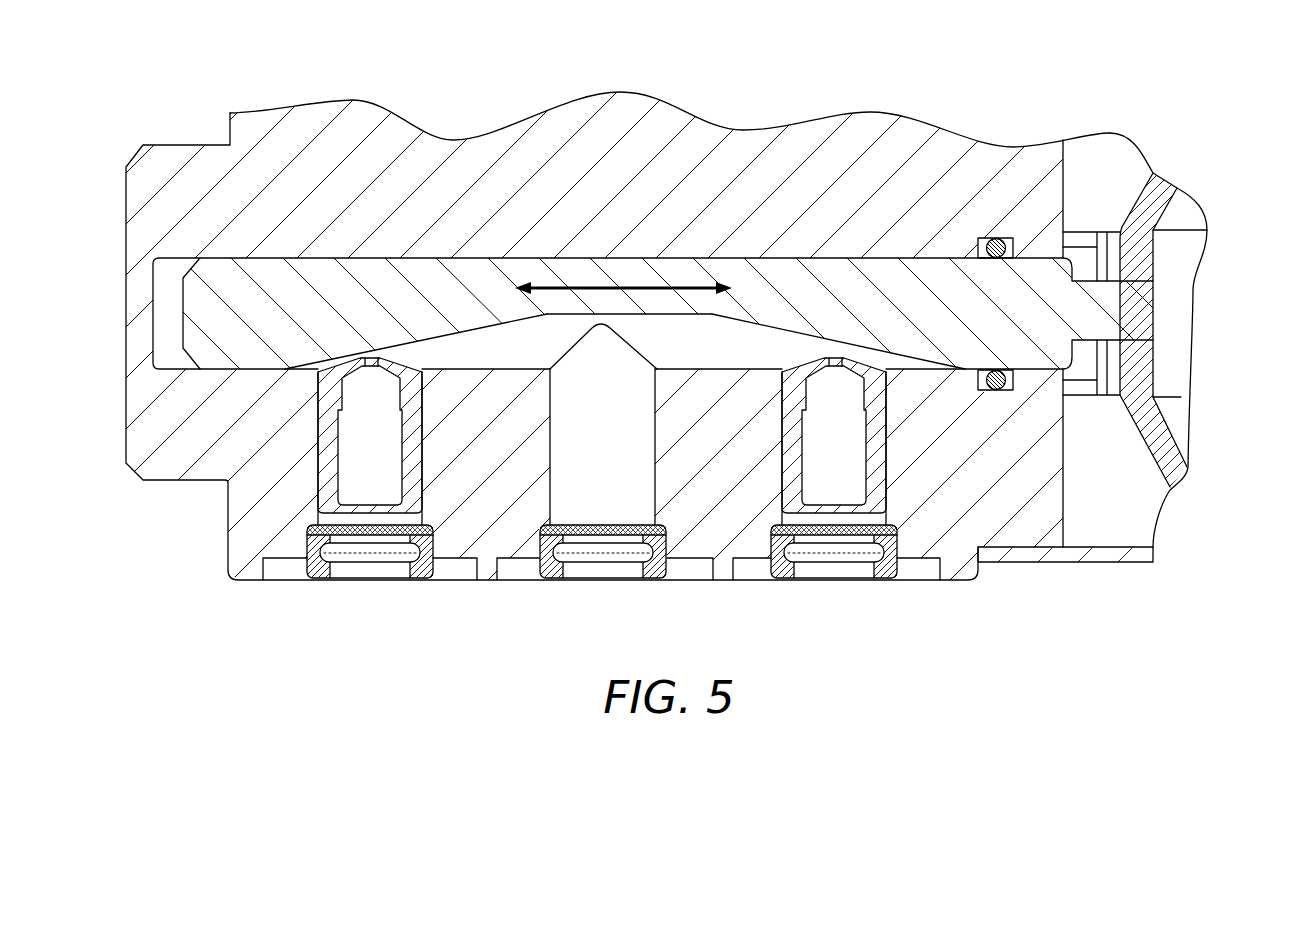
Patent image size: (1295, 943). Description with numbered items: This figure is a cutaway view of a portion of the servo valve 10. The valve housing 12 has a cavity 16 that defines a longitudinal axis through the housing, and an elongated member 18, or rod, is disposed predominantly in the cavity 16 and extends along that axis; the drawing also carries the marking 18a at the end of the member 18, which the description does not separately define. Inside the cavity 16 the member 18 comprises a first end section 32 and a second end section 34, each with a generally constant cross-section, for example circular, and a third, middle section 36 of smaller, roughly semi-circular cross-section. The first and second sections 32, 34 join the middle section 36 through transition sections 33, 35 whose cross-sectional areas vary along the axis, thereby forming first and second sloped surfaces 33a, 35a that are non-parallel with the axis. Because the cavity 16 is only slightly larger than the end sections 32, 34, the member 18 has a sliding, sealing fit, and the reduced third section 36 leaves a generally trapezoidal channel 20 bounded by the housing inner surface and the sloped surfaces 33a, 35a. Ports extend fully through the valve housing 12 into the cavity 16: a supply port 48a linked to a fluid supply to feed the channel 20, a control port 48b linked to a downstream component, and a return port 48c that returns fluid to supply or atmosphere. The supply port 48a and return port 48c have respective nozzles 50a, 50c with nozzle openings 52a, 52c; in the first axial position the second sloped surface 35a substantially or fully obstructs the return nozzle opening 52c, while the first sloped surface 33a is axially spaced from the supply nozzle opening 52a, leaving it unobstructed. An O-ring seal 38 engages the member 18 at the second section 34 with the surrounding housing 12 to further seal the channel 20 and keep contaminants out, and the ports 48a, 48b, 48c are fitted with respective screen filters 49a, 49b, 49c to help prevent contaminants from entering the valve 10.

The servo valve 10 is at (1165, 100).
The valve housing 12 is at (862, 133).
The cavity 16 is at (172, 314).
The elongated member 18 is at (257, 275).
The slide end portion 18a is at (1128, 313).
The channel 20 is at (683, 360).
The first end section 32 is at (240, 340).
The first transition section 33 is at (412, 290).
The first sloped surface 33a is at (466, 338).
The second end section 34 is at (1037, 342).
The second transition section 35 is at (806, 290).
The second sloped surface 35a is at (751, 322).
The third section 36 is at (627, 273).
The O-ring seal 38 is at (997, 238).
The supply port 48a is at (347, 598).
The control port 48b is at (578, 598).
The return port 48c is at (810, 598).
The screen filter 49a is at (388, 528).
The screen filter 49b is at (620, 528).
The screen filter 49c is at (852, 528).
The supply port nozzle 50a is at (330, 465).
The return port nozzle 50c is at (878, 455).
The supply port nozzle opening 52a is at (372, 357).
The return port nozzle opening 52c is at (838, 357).